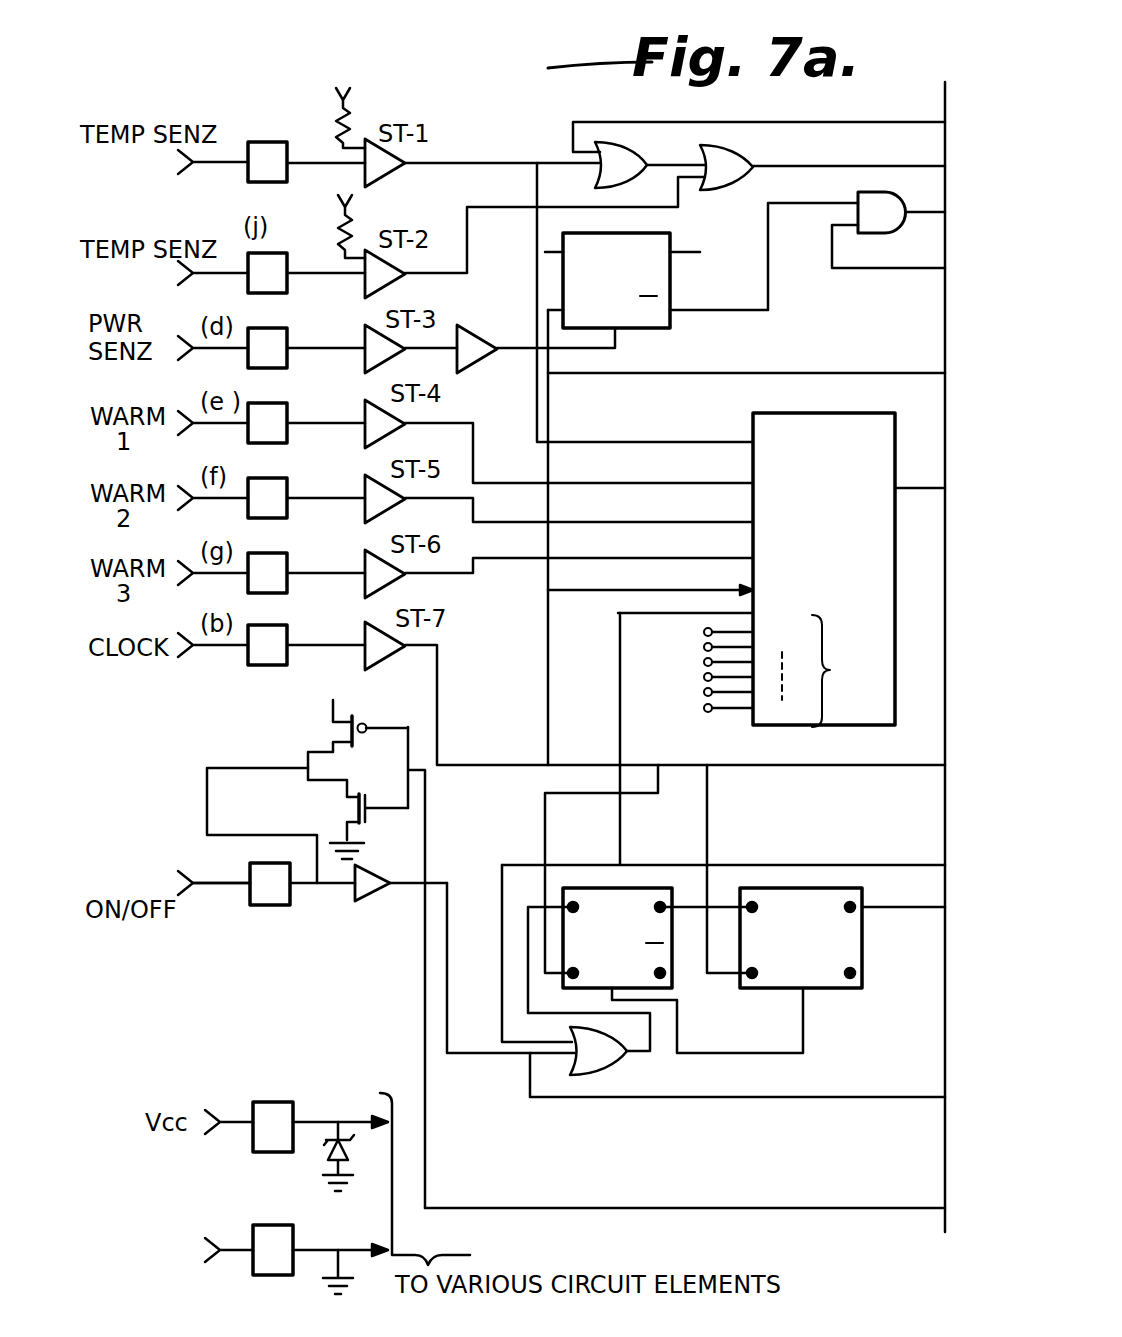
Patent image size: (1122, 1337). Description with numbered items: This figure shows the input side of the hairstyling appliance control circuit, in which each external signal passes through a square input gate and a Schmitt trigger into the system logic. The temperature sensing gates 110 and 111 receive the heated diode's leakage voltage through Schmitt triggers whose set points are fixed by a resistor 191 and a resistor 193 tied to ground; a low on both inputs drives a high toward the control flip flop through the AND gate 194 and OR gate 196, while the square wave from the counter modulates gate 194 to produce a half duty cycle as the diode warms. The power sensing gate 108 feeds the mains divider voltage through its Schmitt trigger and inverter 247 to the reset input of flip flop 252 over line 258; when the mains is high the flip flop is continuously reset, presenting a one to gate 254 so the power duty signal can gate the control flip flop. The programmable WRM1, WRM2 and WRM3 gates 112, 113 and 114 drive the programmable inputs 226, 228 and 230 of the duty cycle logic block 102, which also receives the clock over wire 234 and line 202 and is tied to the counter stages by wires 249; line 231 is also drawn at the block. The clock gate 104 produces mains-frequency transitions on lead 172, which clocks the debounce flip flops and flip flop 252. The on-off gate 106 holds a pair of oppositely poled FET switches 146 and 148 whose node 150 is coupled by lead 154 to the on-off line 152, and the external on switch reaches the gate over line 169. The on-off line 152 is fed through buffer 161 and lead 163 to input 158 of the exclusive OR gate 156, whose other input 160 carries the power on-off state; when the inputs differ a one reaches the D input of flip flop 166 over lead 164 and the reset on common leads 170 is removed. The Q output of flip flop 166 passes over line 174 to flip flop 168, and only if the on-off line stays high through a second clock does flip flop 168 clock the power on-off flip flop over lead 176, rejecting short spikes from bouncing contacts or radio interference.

The duty cycle logic block 102 is at (885, 590).
The clock gate 104 is at (348, 645).
The on-off gate 106 is at (305, 888).
The power sensing gate 108 is at (338, 348).
The temperature sensing gate 110 is at (338, 164).
The temperature sensing gate 111 is at (340, 275).
The programmable WRM1 gate 112 is at (343, 423).
The programmable WRM2 gate 113 is at (340, 498).
The programmable WRM3 gate 114 is at (343, 573).
The FET switch 146 is at (343, 808).
The FET switch 148 is at (328, 730).
The node 150 is at (389, 967).
The on-off line 152 is at (358, 900).
The lead 154 is at (207, 812).
The exclusive OR gate 156 is at (595, 1078).
The input 158 is at (555, 1052).
The input 160 is at (498, 997).
The buffer 161 is at (370, 880).
The lead 163 is at (487, 1060).
The lead 164 is at (662, 1040).
The flip flop 166 is at (672, 985).
The flip flop 168 is at (862, 973).
The line 169 is at (238, 885).
The common leads 170 is at (700, 1058).
The lead 172 is at (465, 762).
The line 174 is at (690, 905).
The lead 176 is at (923, 908).
The resistor 191 is at (356, 126).
The resistor 193 is at (358, 236).
The AND gate 194 is at (620, 152).
The OR gate 196 is at (740, 155).
The line 202 is at (550, 432).
The programmable input 226 is at (675, 485).
The programmable input 228 is at (675, 524).
The programmable input 230 is at (675, 560).
The input line 231 is at (672, 444).
The wire 234 is at (672, 594).
The inverter 247 is at (466, 370).
The wires 249 is at (795, 671).
The flip flop 252 is at (655, 233).
The gate 254 is at (850, 238).
The line 258 is at (604, 355).